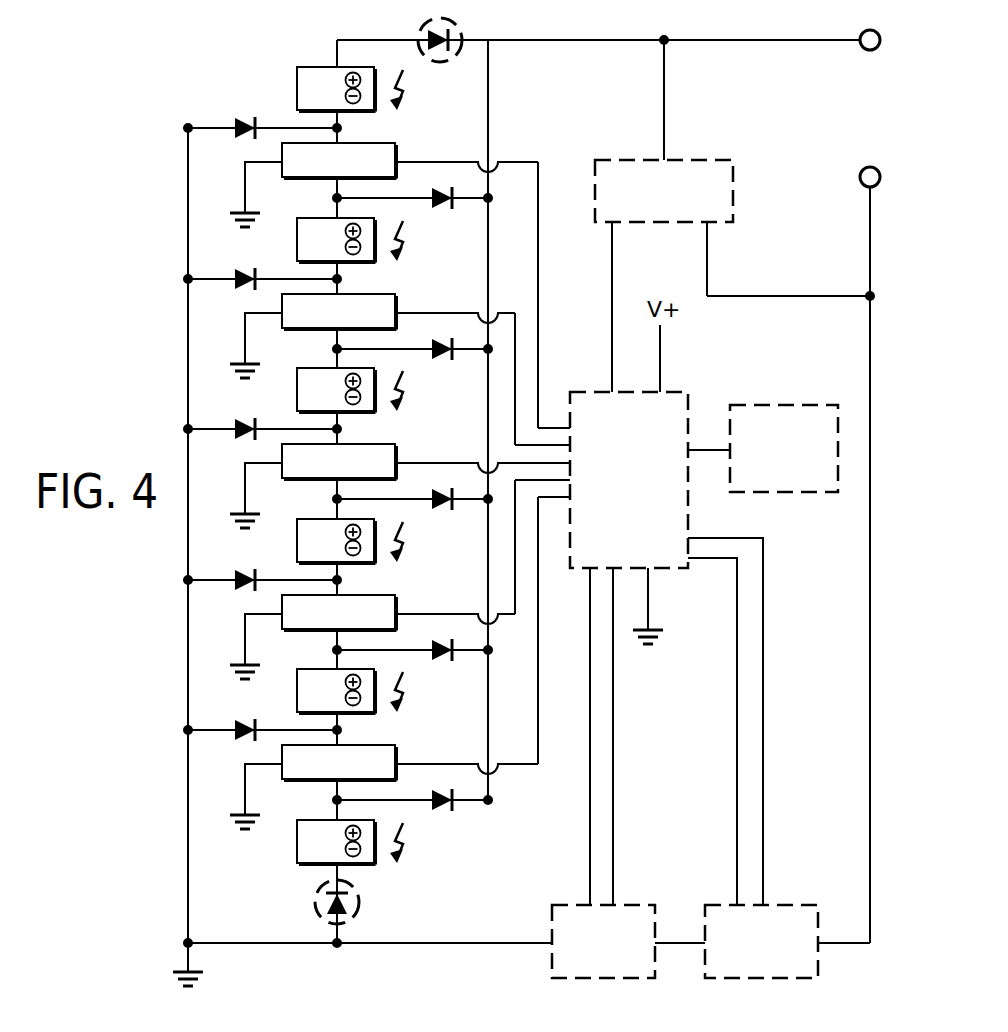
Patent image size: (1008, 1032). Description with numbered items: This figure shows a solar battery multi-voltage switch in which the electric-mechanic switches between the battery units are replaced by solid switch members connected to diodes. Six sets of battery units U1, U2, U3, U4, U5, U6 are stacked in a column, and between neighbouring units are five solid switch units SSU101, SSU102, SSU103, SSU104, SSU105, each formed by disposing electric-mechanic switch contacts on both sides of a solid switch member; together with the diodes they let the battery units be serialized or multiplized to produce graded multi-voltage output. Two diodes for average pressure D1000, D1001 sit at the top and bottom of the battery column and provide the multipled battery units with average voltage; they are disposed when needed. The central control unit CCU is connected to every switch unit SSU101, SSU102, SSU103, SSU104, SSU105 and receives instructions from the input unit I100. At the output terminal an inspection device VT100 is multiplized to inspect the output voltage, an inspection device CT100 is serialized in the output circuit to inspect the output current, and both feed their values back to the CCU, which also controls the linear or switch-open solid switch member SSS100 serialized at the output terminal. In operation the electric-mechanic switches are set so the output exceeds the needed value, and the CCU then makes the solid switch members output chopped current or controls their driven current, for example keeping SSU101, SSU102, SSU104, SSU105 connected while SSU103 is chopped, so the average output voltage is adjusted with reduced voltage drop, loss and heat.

The diode for average pressure D1000 is at (477, 36).
The diode for average pressure D1001 is at (377, 903).
The battery unit U1 is at (350, 89).
The battery unit U2 is at (350, 240).
The battery unit U3 is at (350, 390).
The battery unit U4 is at (350, 541).
The battery unit U5 is at (350, 691).
The battery unit U6 is at (350, 842).
The solid switch unit SSU101 is at (384, 185).
The solid switch unit SSU102 is at (372, 336).
The solid switch unit SSU103 is at (400, 486).
The solid switch unit SSU104 is at (372, 637).
The solid switch unit SSU105 is at (384, 787).
The central control unit CCU is at (629, 480).
The voltage inspection device VT100 is at (664, 191).
The input unit I100 is at (784, 448).
The current inspection device CT100 is at (603, 941).
The solid switch member SSS100 is at (761, 941).